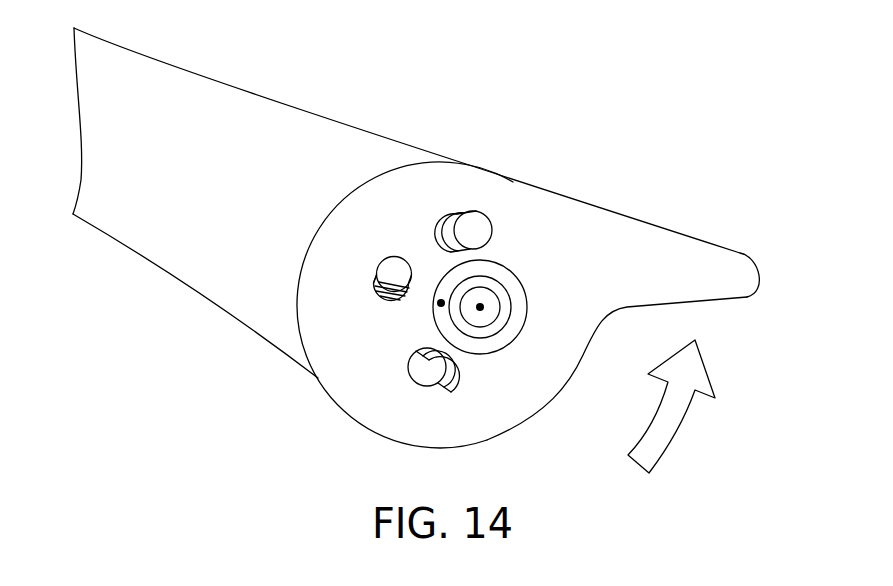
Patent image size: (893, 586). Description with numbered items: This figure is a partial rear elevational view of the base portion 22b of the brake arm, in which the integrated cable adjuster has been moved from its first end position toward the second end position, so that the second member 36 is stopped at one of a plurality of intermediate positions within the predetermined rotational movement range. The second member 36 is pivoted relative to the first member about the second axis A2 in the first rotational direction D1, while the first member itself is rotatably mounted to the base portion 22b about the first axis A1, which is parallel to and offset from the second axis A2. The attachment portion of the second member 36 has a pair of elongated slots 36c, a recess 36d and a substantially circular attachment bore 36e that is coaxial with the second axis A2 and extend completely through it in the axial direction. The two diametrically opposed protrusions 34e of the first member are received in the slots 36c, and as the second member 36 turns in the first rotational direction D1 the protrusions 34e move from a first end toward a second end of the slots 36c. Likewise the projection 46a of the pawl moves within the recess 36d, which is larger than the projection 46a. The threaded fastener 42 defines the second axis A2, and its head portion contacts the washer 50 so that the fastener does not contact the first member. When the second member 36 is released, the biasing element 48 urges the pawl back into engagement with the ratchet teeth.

The base portion 22b is at (223, 87).
The second member 36 is at (671, 224).
The slot 36c is at (437, 228).
The protrusion 34e is at (475, 229).
The attachment bore 36e is at (521, 278).
The threaded fastener 42 is at (485, 307).
The washer 50 is at (514, 328).
The first axis A1 is at (441, 303).
The second axis A2 is at (481, 309).
The projection 46a is at (393, 272).
The biasing element 48 is at (393, 301).
The recess 36d is at (376, 291).
The first rotational direction D1 is at (676, 434).